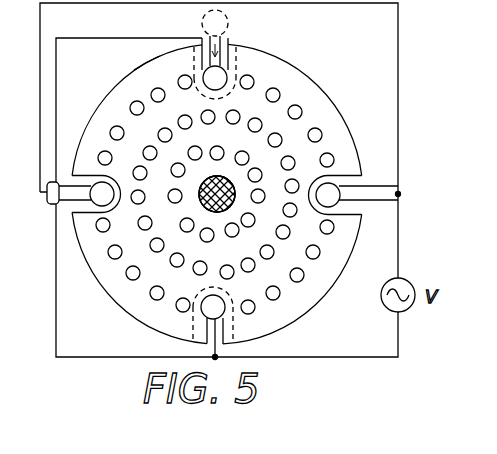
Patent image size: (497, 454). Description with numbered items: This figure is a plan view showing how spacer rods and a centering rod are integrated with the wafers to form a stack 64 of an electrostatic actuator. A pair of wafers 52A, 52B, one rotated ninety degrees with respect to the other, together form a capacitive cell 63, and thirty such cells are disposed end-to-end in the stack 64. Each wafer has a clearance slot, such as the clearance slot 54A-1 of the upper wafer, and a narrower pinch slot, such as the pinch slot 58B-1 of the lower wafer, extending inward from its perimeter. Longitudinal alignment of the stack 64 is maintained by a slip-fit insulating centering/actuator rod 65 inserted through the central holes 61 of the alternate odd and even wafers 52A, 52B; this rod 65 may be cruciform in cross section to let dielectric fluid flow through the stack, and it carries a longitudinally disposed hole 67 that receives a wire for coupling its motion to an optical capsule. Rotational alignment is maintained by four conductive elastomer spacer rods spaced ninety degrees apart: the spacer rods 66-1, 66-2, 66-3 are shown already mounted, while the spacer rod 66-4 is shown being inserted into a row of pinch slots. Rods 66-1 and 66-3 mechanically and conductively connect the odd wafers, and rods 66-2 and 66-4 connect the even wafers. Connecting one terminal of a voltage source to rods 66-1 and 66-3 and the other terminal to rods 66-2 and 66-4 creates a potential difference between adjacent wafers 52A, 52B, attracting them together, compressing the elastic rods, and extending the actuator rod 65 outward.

The wafer 52A is at (134, 70).
The wafer 52B is at (73, 183).
The clearance slot 54A-1 is at (358, 212).
The pinch slot 58B-1 is at (365, 186).
The central hole 61 is at (200, 210).
The capacitive cell 63 is at (385, 99).
The stack 64 is at (330, 95).
The centering/actuator rod 65 is at (234, 193).
The spacer rod 66-1 is at (341, 197).
The spacer rod 66-2 is at (233, 308).
The spacer rod 66-3 is at (100, 200).
The spacer rod 66-4 is at (225, 74).
The longitudinally disposed hole 67 is at (217, 197).